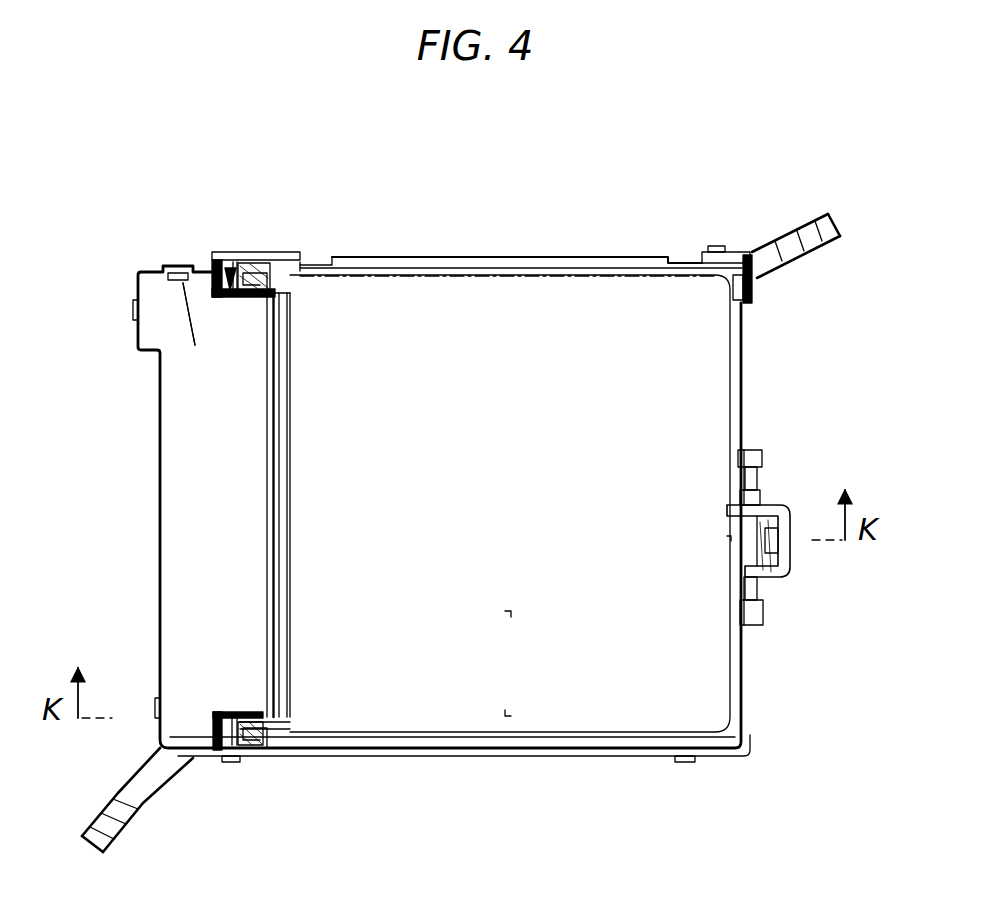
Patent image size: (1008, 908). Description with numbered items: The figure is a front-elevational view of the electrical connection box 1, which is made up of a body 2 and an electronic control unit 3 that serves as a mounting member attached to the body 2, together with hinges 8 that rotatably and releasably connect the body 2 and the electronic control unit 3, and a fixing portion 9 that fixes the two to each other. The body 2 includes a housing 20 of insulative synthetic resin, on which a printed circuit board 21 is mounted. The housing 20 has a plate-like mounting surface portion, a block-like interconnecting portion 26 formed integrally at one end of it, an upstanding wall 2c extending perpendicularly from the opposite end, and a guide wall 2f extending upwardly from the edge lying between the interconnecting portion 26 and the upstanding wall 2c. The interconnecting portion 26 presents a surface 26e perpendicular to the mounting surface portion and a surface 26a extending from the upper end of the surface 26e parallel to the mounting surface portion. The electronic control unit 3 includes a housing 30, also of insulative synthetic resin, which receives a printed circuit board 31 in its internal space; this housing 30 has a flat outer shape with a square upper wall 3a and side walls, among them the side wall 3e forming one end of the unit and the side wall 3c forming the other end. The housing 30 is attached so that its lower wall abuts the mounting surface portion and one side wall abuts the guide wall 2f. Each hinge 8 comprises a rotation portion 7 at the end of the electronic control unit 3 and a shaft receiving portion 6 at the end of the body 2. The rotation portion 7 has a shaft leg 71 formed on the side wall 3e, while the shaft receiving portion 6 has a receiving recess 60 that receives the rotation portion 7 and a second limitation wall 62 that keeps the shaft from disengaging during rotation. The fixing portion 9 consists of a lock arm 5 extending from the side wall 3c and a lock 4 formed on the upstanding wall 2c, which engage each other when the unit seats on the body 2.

The electrical connection box 1 is at (716, 186).
The body 2 is at (409, 514).
The housing 20 is at (160, 465).
The printed circuit board 21 is at (360, 520).
The interconnecting portion 26 is at (190, 385).
The surface 26a is at (195, 350).
The surface 26e is at (272, 588).
The upstanding wall 2c is at (742, 650).
The guide wall 2f is at (540, 757).
The electronic control unit 3 is at (457, 463).
The housing 30 is at (425, 297).
The printed circuit board 31 is at (465, 340).
The upper wall 3a is at (597, 295).
The side wall 3c is at (733, 676).
The side wall 3e is at (278, 628).
The lock 4 is at (787, 500).
The lock arm 5 is at (757, 520).
The shaft receiving portion 6 is at (220, 268).
The rotation portion 7 is at (261, 272).
The receiving recess 60 is at (212, 265).
The second limitation wall 62 is at (178, 272).
The shaft leg 71 is at (247, 272).
The hinge 8 is at (855, 800).
The fixing portion 9 is at (855, 885).